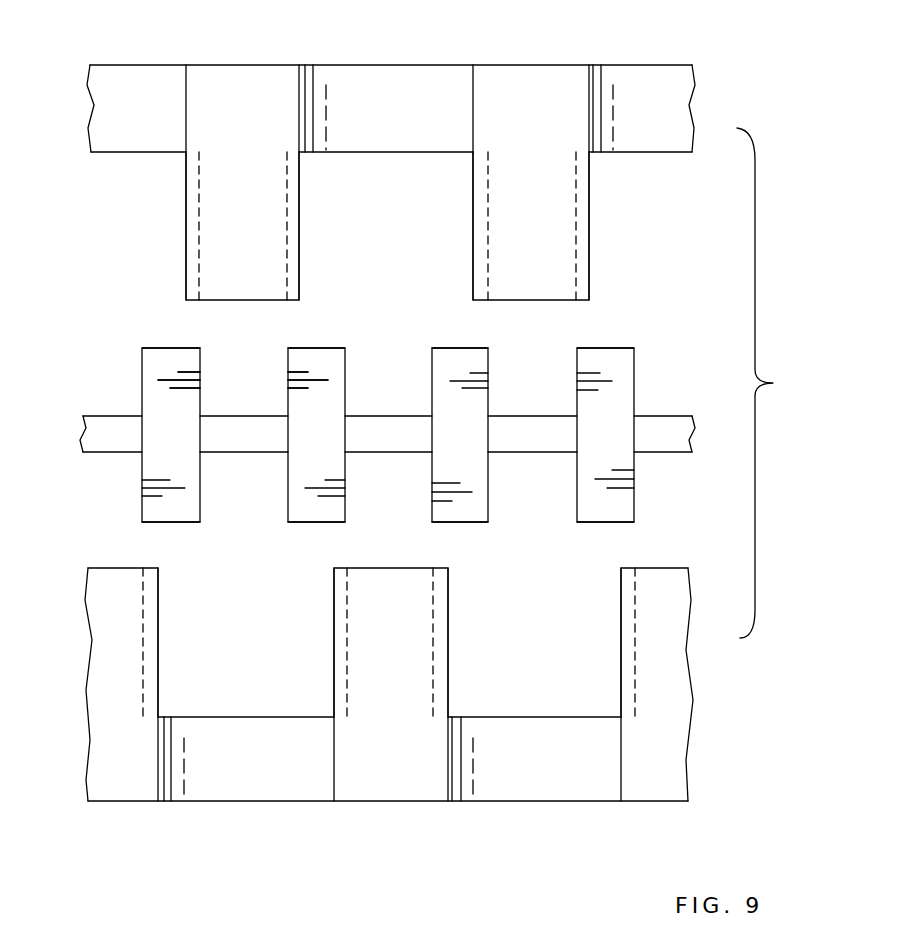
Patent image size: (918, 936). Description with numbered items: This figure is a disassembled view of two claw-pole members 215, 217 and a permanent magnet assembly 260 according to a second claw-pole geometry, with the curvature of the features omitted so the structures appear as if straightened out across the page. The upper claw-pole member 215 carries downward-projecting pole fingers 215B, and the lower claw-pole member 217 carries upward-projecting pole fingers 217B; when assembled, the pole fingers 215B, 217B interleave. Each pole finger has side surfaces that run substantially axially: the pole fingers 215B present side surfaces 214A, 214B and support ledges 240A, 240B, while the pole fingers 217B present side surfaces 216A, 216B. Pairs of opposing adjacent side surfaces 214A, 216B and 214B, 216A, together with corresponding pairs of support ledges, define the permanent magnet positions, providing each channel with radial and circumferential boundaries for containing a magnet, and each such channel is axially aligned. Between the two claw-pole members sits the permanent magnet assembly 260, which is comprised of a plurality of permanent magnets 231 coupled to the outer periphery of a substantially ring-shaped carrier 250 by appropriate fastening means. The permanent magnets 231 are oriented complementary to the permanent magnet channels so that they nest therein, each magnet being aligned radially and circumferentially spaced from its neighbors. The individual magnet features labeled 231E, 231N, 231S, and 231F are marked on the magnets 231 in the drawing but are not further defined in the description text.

The claw-pole member 215 is at (433, 62).
The pole finger 215B is at (248, 190).
The side surface 214A is at (183, 185).
The side surface 214B is at (290, 183).
The support ledge 240A is at (186, 232).
The support ledge 240B is at (299, 272).
The permanent magnet 231 is at (283, 348).
The magnet end 231E is at (142, 348).
The magnet north pole 231N is at (142, 372).
The magnet south pole 231S is at (196, 478).
The magnet face 231F is at (288, 406).
The carrier 250 is at (672, 427).
The permanent magnet assembly 260 is at (782, 380).
The side surface 216A is at (343, 697).
The side surface 216B is at (158, 688).
The claw-pole member 217 is at (308, 808).
The pole finger 217B is at (119, 690).